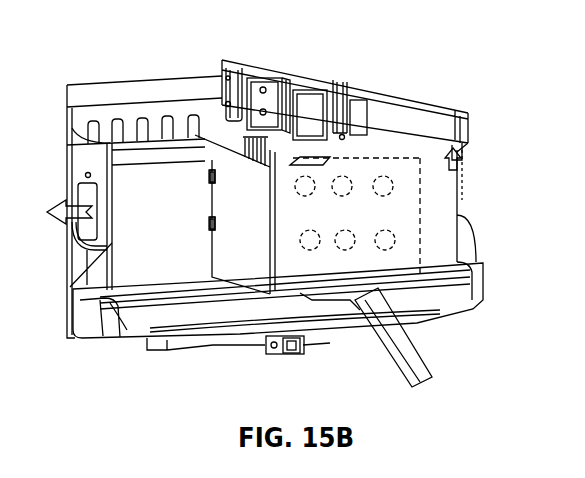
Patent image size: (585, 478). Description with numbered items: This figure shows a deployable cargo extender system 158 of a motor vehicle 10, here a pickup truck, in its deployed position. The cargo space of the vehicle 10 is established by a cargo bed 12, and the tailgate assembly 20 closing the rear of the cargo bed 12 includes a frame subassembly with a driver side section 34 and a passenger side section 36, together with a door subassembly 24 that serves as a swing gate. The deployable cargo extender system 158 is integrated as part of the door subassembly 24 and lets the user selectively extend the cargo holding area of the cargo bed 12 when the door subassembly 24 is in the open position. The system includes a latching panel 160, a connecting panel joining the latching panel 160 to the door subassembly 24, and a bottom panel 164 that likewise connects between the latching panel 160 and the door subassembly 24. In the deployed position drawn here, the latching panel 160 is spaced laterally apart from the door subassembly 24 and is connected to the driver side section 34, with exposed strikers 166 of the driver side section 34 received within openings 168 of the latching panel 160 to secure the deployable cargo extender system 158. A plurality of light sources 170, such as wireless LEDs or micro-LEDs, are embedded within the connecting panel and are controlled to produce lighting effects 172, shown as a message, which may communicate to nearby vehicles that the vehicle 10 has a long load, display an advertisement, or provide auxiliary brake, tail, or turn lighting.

The motor vehicle 10 is at (433, 55).
The cargo bed 12 is at (280, 157).
The tailgate assembly 20 is at (458, 128).
The door subassembly 24 is at (415, 140).
The driver side section 34 is at (70, 283).
The passenger side section 36 is at (470, 145).
The deployable cargo extender system 158 is at (262, 298).
The latching panel 160 is at (232, 172).
The bottom panel 164 is at (282, 355).
The exposed strikers 166 is at (208, 235).
The openings 168 is at (214, 174).
The light sources 170 is at (384, 176).
The lighting effects 172 is at (405, 212).